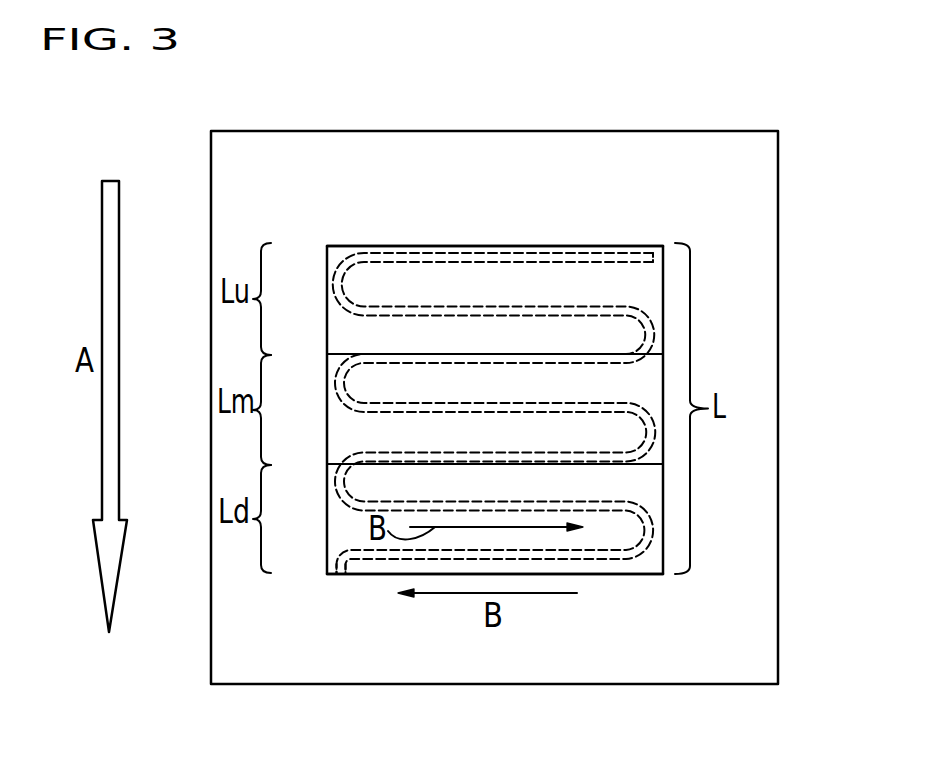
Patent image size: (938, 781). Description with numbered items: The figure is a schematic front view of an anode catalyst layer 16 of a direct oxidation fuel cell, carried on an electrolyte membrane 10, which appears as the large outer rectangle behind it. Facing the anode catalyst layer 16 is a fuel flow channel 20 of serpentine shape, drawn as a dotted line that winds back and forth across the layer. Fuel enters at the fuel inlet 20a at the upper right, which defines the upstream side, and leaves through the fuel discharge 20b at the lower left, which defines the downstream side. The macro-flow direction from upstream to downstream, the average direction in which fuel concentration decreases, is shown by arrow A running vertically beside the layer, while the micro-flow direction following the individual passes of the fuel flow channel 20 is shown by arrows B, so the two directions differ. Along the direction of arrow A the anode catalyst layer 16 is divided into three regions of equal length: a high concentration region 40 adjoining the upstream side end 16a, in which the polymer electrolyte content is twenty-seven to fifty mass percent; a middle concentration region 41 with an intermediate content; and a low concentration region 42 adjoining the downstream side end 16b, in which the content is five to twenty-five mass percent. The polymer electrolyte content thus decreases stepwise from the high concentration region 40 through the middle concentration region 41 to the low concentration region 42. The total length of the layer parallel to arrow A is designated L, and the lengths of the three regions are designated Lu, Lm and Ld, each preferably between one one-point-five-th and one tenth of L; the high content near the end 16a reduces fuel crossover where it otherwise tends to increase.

The electrolyte membrane 10 is at (664, 156).
The anode catalyst layer 16 is at (354, 205).
The upstream side end 16a is at (559, 247).
The downstream side end 16b is at (663, 576).
The fuel flow channel 20 is at (333, 283).
The fuel inlet 20a is at (651, 247).
The fuel discharge 20b is at (339, 577).
The high concentration region 40 is at (496, 288).
The middle concentration region 41 is at (363, 433).
The low concentration region 42 is at (612, 530).